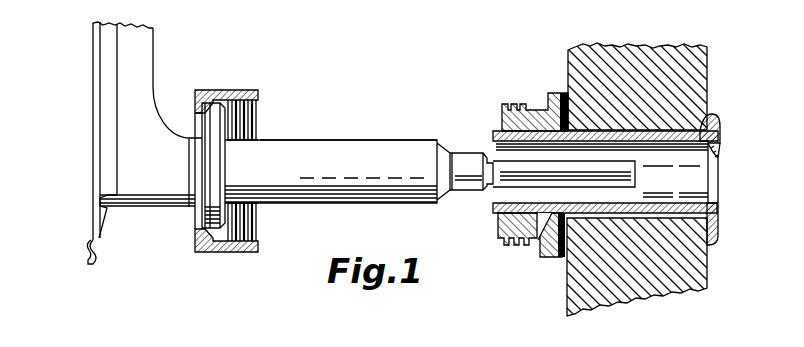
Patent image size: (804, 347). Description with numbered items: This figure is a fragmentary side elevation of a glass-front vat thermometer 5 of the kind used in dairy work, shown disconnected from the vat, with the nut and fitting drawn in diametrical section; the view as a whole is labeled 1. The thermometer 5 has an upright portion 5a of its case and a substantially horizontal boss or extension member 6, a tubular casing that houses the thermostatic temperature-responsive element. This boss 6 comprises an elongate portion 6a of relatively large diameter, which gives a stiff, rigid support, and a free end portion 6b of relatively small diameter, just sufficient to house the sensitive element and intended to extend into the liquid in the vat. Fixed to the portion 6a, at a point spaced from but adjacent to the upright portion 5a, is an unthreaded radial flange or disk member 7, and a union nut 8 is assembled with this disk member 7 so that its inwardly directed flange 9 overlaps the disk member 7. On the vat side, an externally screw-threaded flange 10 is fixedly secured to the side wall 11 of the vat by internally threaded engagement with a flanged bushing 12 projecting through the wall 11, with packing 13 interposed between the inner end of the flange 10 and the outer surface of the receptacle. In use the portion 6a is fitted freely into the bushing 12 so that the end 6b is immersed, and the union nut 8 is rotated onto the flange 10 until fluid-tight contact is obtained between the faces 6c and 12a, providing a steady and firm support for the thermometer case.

The gland nut 1 is at (197, 254).
The glass-front thermometer 5 is at (165, 62).
The upright portion of the case 5a is at (128, 65).
The boss or extension member 6 is at (415, 131).
The elongate portion of relatively large diameter 6a is at (312, 142).
The free end portion 6b is at (515, 170).
The face 6c is at (447, 157).
The radial flange or disk member 7 is at (220, 158).
The union nut 8 is at (233, 90).
The inwardly directed flange 9 is at (196, 108).
The externally screw-threaded flange 10 is at (528, 105).
The side wall of the vat 11 is at (582, 297).
The flanged bushing 12 is at (688, 133).
The face 12a is at (719, 159).
The packing 13 is at (562, 88).